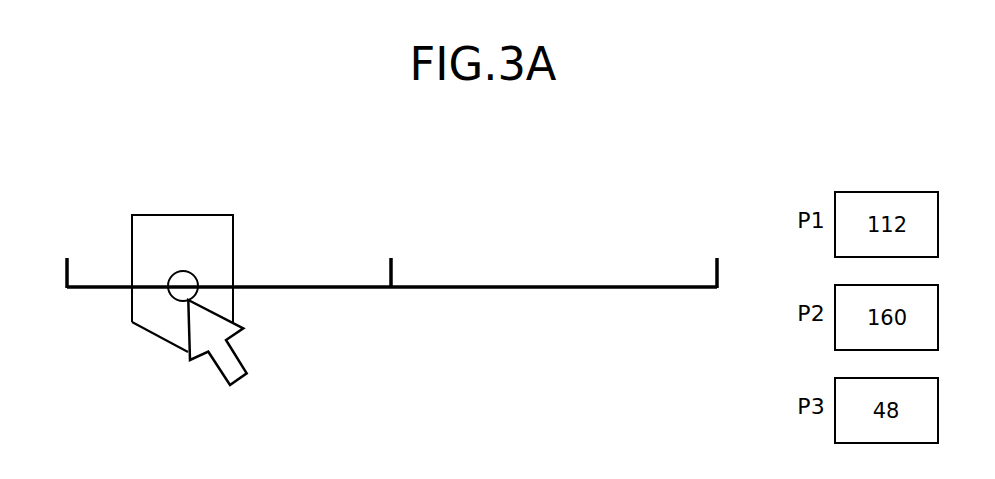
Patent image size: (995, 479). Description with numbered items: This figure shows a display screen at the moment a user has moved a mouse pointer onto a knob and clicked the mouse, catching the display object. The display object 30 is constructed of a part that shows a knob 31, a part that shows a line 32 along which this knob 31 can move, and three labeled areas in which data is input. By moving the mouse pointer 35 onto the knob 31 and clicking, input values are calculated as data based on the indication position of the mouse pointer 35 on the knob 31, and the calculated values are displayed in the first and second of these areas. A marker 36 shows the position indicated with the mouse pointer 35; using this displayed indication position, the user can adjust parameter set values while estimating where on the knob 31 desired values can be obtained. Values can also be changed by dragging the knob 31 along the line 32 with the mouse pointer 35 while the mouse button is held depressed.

The display object 30 is at (598, 158).
The knob 31 is at (197, 228).
The line 32 is at (498, 292).
The mouse pointer 35 is at (231, 359).
The marker 36 is at (169, 299).